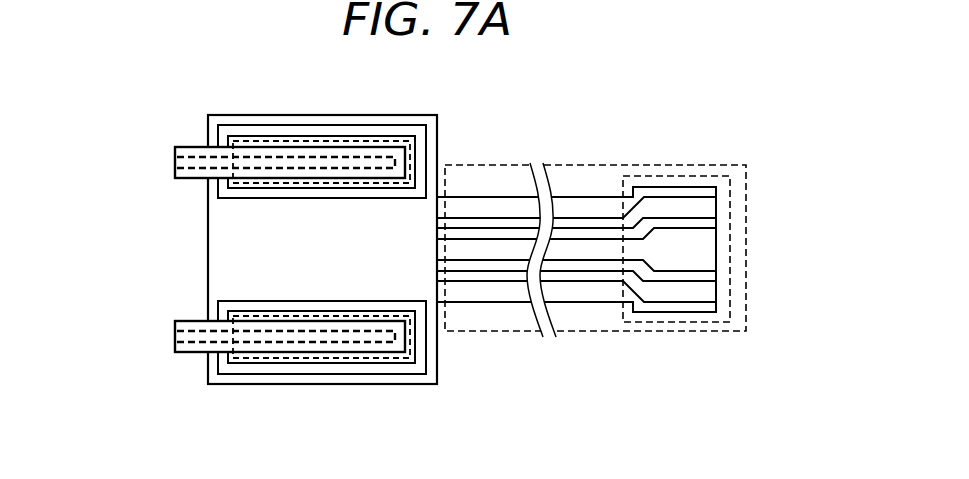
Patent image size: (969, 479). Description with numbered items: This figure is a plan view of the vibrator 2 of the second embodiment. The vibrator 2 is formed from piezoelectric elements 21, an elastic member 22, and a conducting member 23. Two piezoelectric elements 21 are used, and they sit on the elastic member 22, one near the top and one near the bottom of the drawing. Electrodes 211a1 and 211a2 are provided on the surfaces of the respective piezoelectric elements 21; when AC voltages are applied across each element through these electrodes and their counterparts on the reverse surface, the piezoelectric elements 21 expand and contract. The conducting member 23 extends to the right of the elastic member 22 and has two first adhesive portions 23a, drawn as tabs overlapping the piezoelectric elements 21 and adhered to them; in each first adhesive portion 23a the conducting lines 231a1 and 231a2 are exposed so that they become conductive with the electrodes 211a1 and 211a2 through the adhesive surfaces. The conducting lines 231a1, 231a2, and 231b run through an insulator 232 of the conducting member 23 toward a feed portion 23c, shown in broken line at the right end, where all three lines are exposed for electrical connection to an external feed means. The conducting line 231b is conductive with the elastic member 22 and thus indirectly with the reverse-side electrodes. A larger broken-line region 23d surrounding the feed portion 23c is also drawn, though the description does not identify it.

The vibrator 2 is at (122, 96).
The piezoelectric element 21 is at (218, 187).
The elastic member 22 is at (208, 237).
The conducting member 23 is at (570, 197).
The first adhesive portion 23a is at (312, 140).
The feed portion 23c is at (720, 175).
The wiring portion 23d is at (692, 332).
The electrode 211a1 is at (230, 142).
The electrode 211a2 is at (230, 360).
The conducting line 231a1 is at (710, 205).
The conducting line 231a2 is at (710, 292).
The conducting line 231b is at (710, 248).
The insulator 232 is at (604, 205).